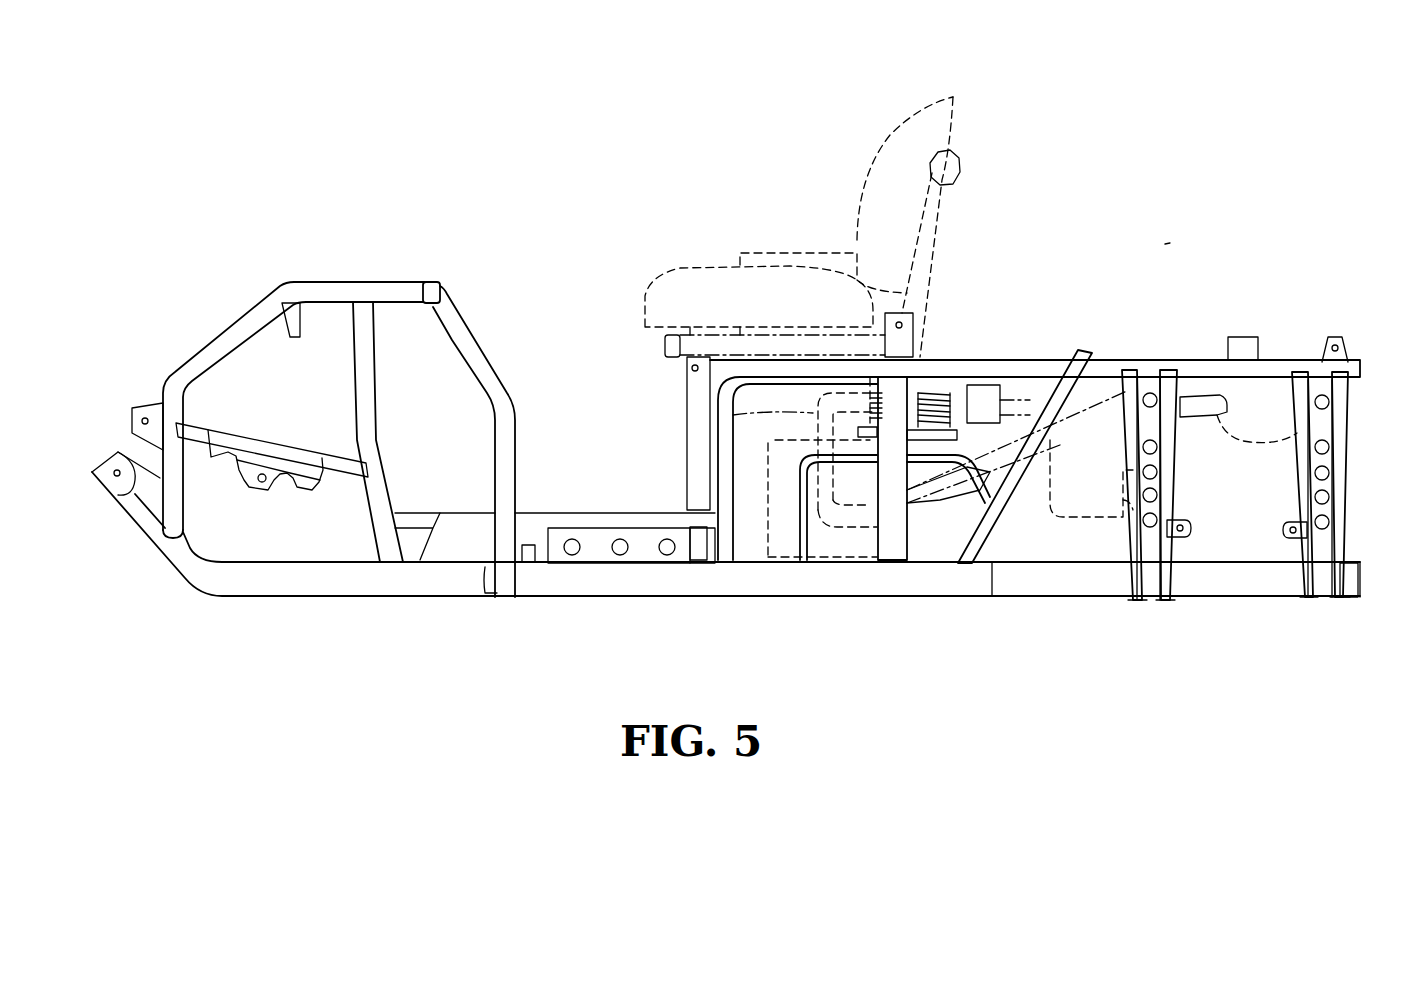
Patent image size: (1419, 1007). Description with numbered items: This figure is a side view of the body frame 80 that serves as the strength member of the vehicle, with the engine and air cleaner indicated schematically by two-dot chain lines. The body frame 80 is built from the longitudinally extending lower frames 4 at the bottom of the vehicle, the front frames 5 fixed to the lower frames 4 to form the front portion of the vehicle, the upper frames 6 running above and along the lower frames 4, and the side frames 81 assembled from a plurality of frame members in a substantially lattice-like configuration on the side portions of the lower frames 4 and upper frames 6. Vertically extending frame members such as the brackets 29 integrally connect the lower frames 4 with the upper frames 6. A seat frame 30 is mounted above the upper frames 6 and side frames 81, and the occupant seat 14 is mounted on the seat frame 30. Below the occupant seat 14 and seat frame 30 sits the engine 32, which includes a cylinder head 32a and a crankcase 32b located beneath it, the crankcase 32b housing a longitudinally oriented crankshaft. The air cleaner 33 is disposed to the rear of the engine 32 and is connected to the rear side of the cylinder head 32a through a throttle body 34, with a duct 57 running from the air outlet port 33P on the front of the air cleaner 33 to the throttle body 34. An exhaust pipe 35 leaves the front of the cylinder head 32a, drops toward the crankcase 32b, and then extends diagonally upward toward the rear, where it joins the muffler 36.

The lower frame 4 is at (291, 590).
The front frame 5 is at (224, 338).
The upper frame 6 is at (1200, 360).
The occupant seat 14 is at (703, 283).
The bracket 29 is at (1142, 543).
The seat frame 30 is at (937, 242).
The engine 32 is at (768, 567).
The cylinder head 32a is at (930, 365).
The crankcase 32b is at (937, 527).
The air cleaner 33 is at (1077, 502).
The air outlet port 33P is at (1037, 378).
The throttle body 34 is at (1000, 390).
The exhaust pipe 35 is at (700, 428).
The muffler 36 is at (1297, 435).
The duct 57 is at (1040, 372).
The body frame 80 is at (1162, 245).
The side frame 81 is at (890, 530).